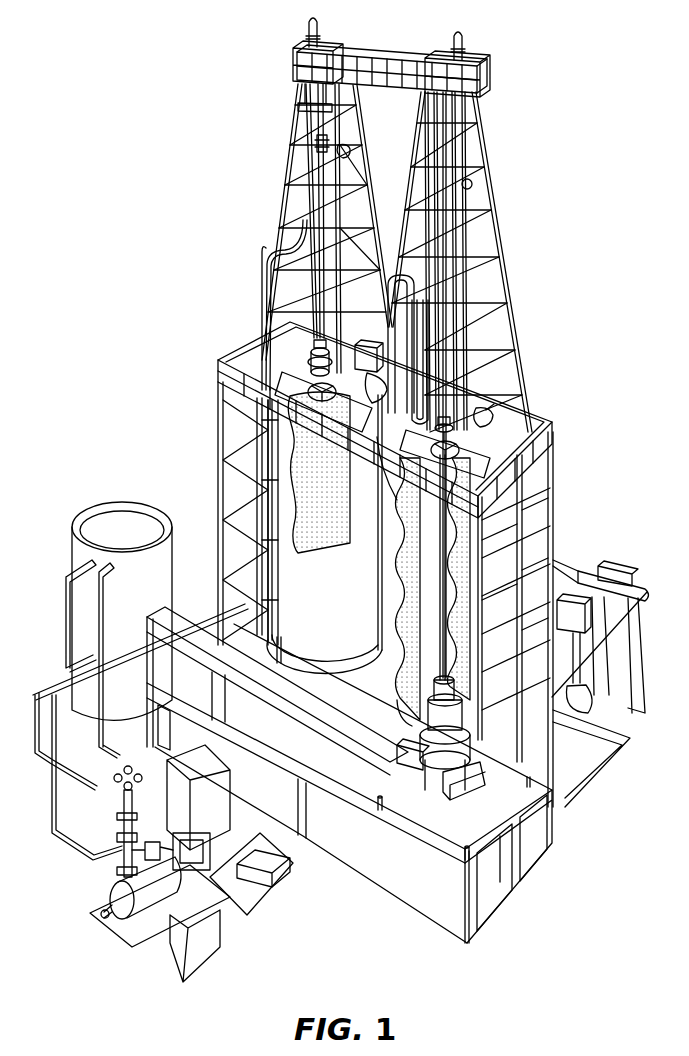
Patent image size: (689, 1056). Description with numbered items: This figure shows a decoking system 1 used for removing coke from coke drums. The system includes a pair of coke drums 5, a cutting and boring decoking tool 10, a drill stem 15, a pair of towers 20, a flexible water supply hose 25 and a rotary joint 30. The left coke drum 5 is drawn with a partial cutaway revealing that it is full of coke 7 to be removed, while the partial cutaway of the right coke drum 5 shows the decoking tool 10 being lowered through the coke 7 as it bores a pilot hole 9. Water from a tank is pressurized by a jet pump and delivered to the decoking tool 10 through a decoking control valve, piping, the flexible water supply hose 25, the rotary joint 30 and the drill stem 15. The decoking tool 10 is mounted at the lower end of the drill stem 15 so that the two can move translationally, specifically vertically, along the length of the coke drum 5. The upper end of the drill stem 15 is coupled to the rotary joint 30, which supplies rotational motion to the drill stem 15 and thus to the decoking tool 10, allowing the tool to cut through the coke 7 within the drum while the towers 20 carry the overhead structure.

The decoking system 1 is at (230, 106).
The coke drum 5 is at (314, 611).
The coke 7 is at (323, 526).
The pilot hole 9 is at (427, 660).
The decoking tool 10 is at (308, 352).
The drill stem 15 is at (318, 212).
The tower 20 is at (489, 214).
The flexible water supply hose 25 is at (262, 267).
The rotary joint 30 is at (340, 147).